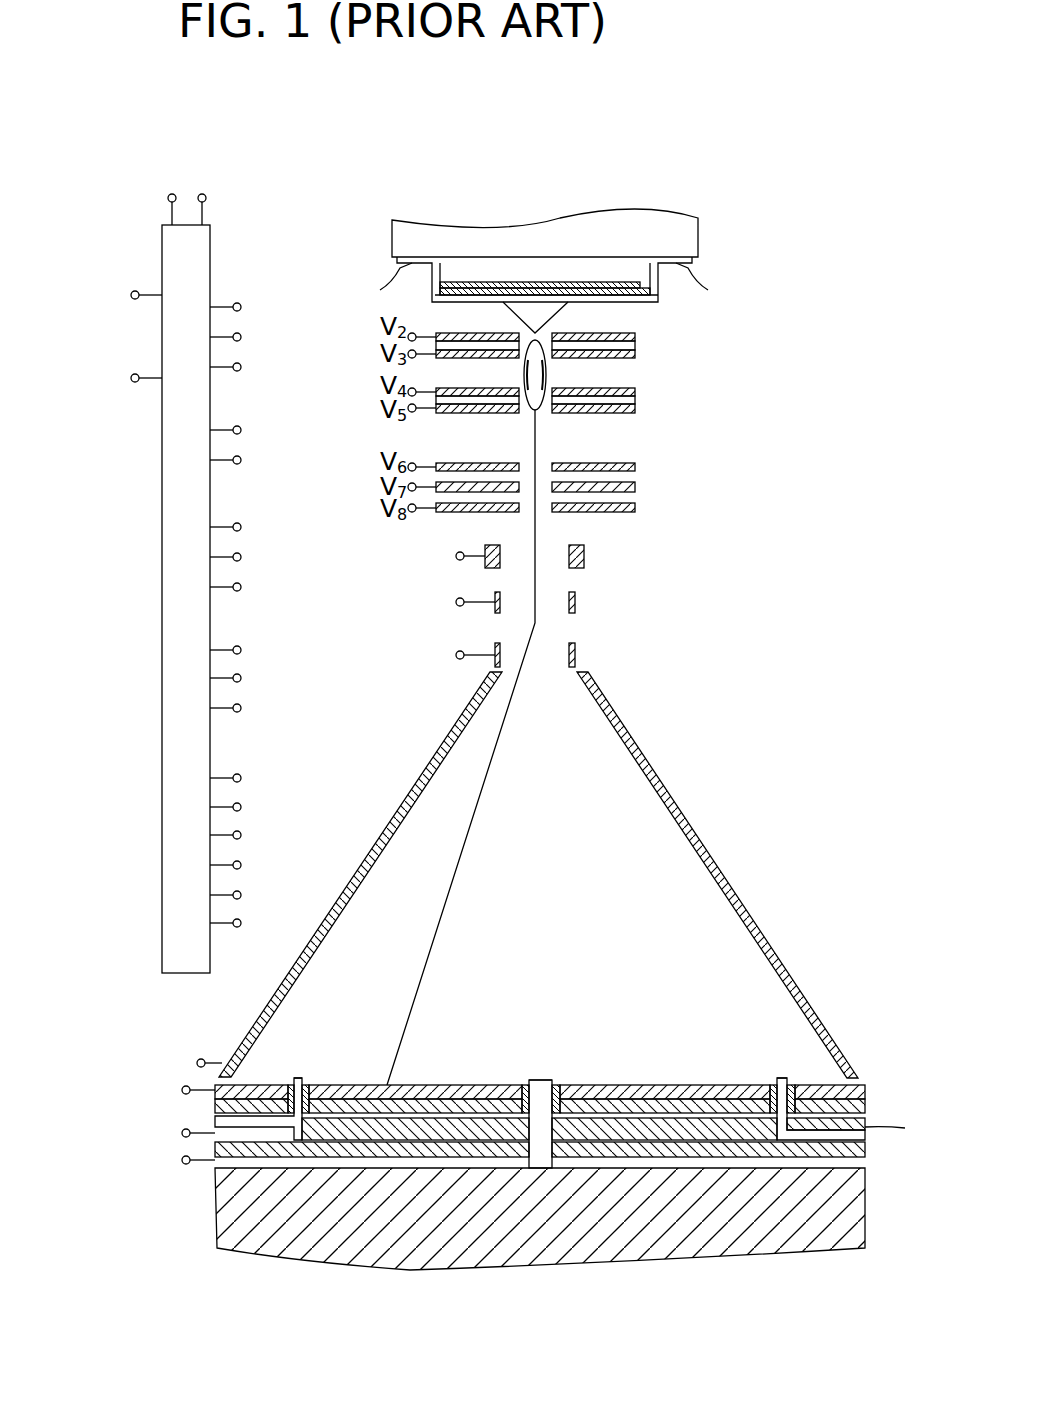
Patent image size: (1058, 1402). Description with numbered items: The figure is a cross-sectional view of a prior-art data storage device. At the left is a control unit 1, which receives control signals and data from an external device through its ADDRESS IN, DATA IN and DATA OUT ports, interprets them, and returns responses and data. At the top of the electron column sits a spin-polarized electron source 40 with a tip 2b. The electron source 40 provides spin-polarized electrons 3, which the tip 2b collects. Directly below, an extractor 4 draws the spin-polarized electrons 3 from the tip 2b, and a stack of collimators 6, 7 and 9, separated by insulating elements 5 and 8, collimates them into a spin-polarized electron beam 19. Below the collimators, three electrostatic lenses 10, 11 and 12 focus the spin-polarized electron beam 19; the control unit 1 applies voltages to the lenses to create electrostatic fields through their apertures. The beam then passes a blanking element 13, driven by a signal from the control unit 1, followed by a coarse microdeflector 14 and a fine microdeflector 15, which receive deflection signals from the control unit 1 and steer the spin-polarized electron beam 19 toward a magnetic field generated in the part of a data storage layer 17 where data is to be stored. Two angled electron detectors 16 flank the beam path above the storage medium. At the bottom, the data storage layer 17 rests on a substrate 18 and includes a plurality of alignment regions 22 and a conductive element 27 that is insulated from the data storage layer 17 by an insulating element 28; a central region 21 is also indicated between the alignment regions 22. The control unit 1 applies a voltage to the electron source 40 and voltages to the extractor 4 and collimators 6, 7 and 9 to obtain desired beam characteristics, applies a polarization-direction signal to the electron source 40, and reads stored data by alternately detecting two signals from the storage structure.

The control unit 1 is at (212, 248).
The tip 2b is at (558, 312).
The spin-polarized electrons 3 is at (528, 336).
The extractor 4 is at (635, 335).
The insulating element 5 is at (635, 350).
The collimator 6 is at (635, 357).
The collimator 7 is at (635, 392).
The insulating element 8 is at (635, 403).
The collimator 9 is at (635, 413).
The electrostatic lens 10 is at (635, 467).
The electrostatic lens 11 is at (635, 488).
The electrostatic lens 12 is at (635, 509).
The blanking element 13 is at (584, 556).
The coarse microdeflector 14 is at (575, 602).
The fine microdeflector 15 is at (575, 655).
The electron detector 16 is at (668, 793).
The data storage layer 17 is at (470, 1085).
The substrate 18 is at (865, 1205).
The spin-polarized electron beam 19 is at (480, 805).
The central electrode region 21 is at (518, 1031).
The alignment regions 22 is at (311, 1031).
The conductive element 27 is at (300, 1078).
The insulating element 28 is at (310, 1085).
The spin-polarized electron source 40 is at (484, 220).